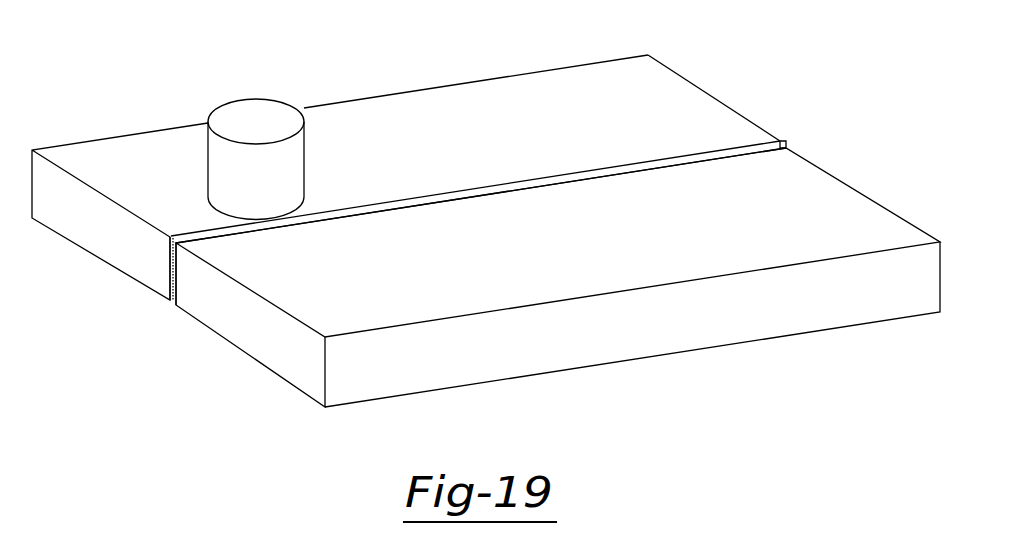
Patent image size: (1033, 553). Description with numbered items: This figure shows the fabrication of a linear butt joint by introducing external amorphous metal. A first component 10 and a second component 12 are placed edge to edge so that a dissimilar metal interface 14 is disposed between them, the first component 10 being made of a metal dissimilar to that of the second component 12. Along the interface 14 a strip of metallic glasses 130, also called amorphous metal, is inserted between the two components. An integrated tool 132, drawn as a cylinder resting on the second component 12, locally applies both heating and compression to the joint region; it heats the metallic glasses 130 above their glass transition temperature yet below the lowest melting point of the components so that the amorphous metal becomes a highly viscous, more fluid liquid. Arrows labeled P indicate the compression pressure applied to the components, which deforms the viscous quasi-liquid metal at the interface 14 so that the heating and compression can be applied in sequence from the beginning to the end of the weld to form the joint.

The first component 10 is at (877, 210).
The second component 12 is at (677, 90).
The dissimilar metal interface 14 is at (172, 268).
The metallic glasses 130 is at (778, 138).
The integrated tool 132 is at (256, 108).
The pressing force P is at (132, 123).